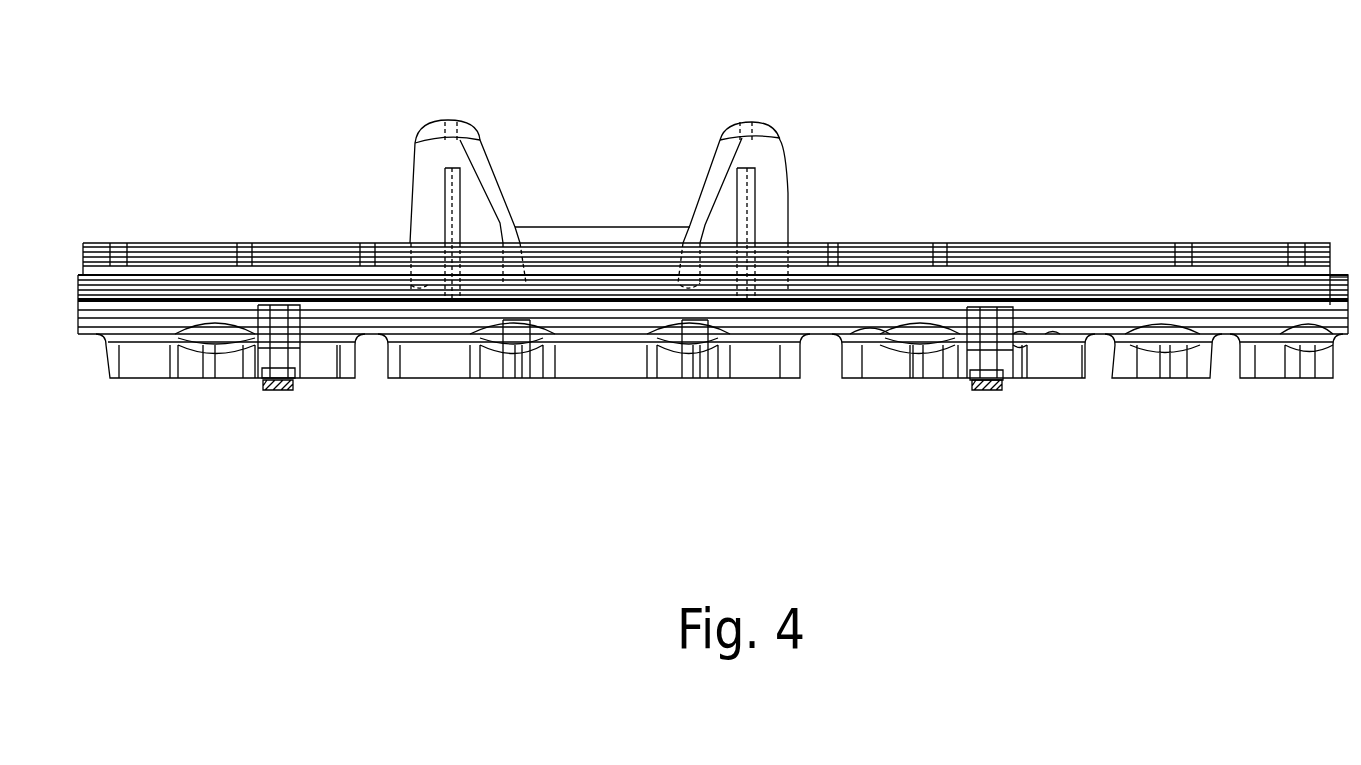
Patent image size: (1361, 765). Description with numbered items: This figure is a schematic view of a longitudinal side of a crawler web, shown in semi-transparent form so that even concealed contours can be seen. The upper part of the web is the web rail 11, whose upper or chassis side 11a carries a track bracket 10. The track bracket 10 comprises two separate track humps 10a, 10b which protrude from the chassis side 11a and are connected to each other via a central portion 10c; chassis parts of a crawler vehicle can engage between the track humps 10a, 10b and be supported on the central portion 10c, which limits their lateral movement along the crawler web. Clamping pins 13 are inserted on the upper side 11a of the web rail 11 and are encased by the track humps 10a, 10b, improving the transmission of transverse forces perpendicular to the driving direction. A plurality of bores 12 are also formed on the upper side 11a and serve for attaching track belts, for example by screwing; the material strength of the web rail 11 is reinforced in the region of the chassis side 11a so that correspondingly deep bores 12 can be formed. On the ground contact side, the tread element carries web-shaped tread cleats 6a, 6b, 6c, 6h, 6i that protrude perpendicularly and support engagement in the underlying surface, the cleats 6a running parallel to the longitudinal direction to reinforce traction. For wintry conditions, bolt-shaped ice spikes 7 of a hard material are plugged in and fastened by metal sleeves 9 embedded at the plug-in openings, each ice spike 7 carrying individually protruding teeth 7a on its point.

The tread cleat 6a is at (438, 370).
The tread cleat 6b is at (492, 370).
The tread cleat 6c is at (535, 370).
The tread cleat 6h is at (875, 370).
The tread cleat 6i is at (935, 370).
The ice spike 7 is at (968, 386).
The teeth 7a is at (990, 392).
The metal sleeve 9 is at (1010, 345).
The track bracket 10 is at (645, 168).
The track hump 10a is at (745, 130).
The track hump 10b is at (433, 130).
The central portion 10c is at (589, 236).
The web rail 11 is at (1103, 243).
The chassis side 11a is at (1053, 243).
The bore 12 is at (118, 243).
The clamping pin 13 is at (461, 172).